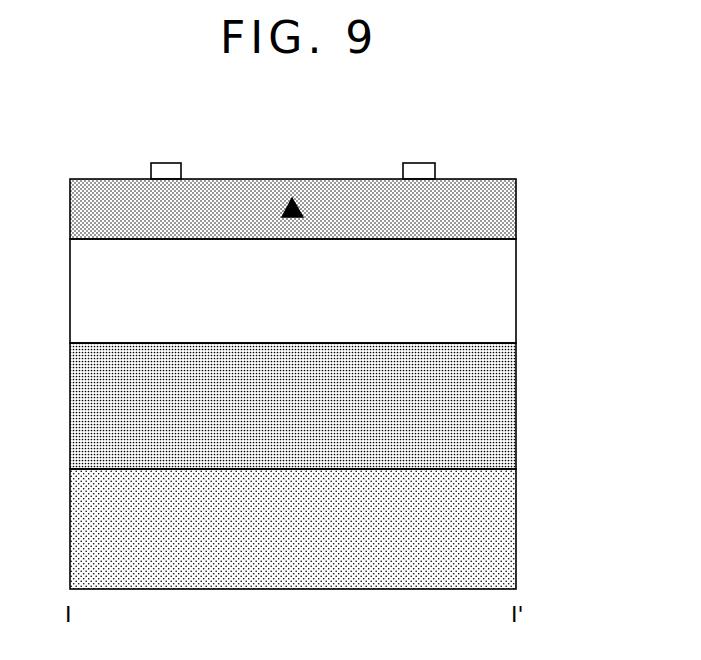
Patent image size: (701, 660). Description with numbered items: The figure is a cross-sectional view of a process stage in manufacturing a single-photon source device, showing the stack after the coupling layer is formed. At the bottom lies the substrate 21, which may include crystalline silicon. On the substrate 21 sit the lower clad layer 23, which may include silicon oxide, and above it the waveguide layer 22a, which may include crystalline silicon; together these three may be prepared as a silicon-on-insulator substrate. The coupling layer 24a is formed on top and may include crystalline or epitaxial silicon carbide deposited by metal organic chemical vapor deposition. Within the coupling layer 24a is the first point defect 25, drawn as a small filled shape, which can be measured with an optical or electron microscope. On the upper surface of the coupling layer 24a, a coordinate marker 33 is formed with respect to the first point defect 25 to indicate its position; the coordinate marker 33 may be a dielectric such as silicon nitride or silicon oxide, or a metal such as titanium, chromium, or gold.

The substrate 21 is at (505, 528).
The waveguide layer 22a is at (505, 297).
The lower clad layer 23 is at (505, 410).
The coupling layer 24a is at (505, 208).
The first point defect 25 is at (292, 198).
The coordinate marker 33 is at (418, 163).